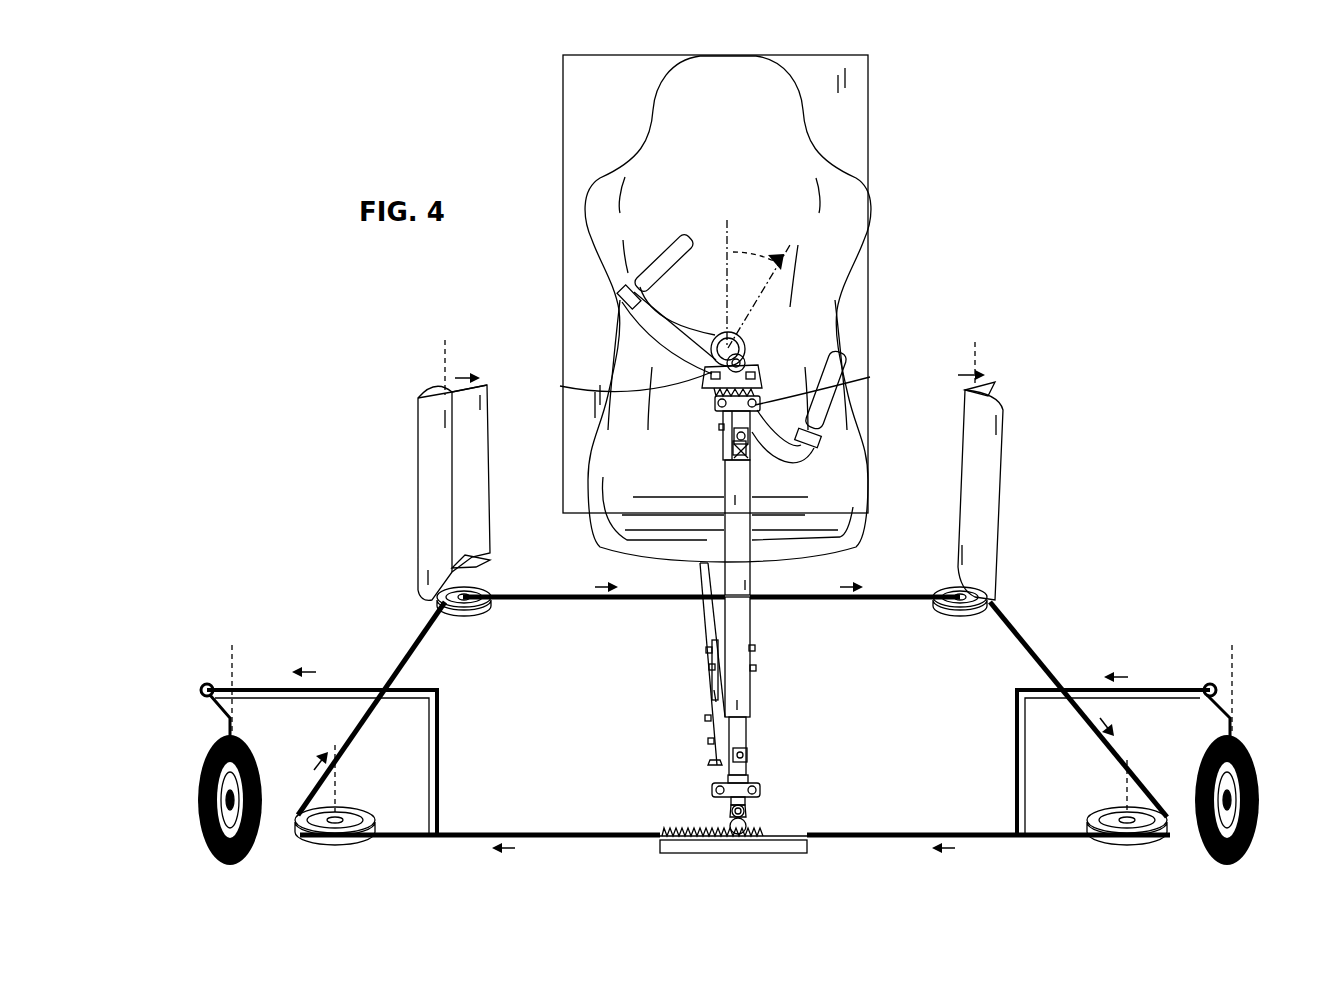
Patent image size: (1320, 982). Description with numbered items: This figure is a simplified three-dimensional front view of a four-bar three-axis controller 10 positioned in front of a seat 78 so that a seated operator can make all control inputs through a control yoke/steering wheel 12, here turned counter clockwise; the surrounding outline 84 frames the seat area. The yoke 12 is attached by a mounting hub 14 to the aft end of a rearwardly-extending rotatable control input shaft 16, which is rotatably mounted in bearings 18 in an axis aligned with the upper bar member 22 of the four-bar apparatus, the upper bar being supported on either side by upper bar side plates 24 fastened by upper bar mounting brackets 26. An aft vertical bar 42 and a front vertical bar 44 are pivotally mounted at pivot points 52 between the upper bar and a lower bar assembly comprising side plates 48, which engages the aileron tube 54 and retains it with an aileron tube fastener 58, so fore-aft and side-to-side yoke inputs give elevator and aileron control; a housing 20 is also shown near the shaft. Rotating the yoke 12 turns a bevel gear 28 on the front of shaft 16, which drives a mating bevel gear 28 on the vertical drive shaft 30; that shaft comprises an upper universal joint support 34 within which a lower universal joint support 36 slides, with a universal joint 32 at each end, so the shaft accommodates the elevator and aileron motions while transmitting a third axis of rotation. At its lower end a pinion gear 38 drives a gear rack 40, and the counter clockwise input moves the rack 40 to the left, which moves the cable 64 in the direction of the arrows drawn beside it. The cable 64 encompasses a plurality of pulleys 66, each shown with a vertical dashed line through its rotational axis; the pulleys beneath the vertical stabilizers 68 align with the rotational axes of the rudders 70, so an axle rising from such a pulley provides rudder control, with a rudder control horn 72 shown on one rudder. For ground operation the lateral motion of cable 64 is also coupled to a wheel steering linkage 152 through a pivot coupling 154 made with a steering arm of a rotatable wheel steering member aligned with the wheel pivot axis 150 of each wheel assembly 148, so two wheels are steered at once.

The four-bar three-axis controller 10 is at (890, 300).
The control yoke/steering wheel 12 is at (595, 391).
The yoke/steering wheel mounting hub 14 is at (728, 333).
The control input shaft 16 is at (748, 345).
The bearing 18 is at (742, 360).
The housing 20 is at (718, 411).
The upper bar member 22 is at (655, 337).
The upper bar side plate 24 is at (730, 440).
The upper bar mounting bracket 26 is at (716, 393).
The bevel gear 28 is at (760, 372).
The vertical drive shaft 30 is at (752, 580).
The universal joint 32 is at (730, 468).
The upper universal joint support 34 is at (755, 492).
The lower universal joint support 36 is at (746, 694).
The pinion gear 38 is at (730, 824).
The gear rack 40 is at (672, 828).
The aft vertical bar 42 is at (720, 605).
The front vertical bar 44 is at (716, 628).
The lower bar side plate 48 is at (714, 695).
The pivot point 52 is at (720, 427).
The aileron tube 54 is at (701, 582).
The aileron tube fastener 58 is at (707, 718).
The cable 64 is at (400, 667).
The pulley 66 is at (462, 612).
The vertical stabilizer 68 is at (420, 465).
The rudder 70 is at (478, 440).
The rudder control horn 72 is at (478, 562).
The seat 78 is at (850, 211).
The frame 84 is at (868, 143).
The wheel assembly 148 is at (263, 797).
The wheel pivot axis 150 is at (232, 648).
The wheel steering linkage 152 is at (439, 745).
The pivot coupling 154 is at (206, 684).